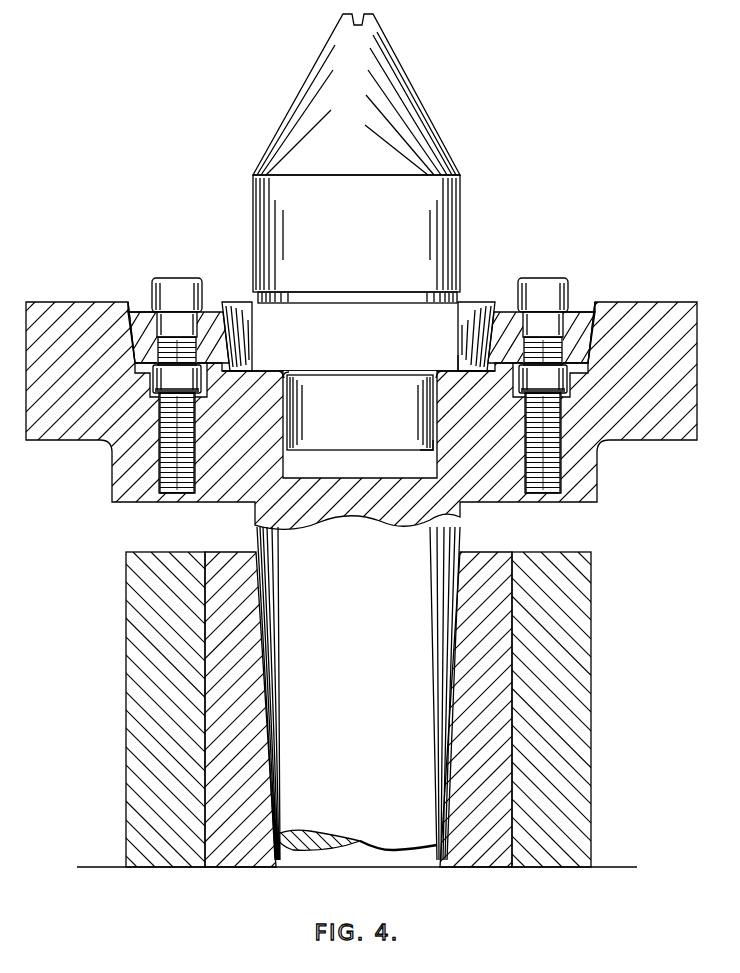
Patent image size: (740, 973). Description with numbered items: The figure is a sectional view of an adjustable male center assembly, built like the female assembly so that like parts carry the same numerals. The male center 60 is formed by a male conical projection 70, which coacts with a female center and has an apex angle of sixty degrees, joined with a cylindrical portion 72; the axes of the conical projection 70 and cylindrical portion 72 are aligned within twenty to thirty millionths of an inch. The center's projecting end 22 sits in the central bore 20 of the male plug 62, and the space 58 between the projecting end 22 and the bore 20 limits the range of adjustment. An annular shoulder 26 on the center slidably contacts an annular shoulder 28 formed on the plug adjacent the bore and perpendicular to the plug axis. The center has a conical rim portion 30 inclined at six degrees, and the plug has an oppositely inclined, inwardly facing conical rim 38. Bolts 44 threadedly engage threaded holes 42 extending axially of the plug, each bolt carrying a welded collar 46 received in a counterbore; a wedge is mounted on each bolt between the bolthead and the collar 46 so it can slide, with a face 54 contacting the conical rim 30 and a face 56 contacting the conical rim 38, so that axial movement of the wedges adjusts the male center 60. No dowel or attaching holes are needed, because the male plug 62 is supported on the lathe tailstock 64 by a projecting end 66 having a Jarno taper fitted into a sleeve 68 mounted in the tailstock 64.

The central bore 20 is at (285, 463).
The projecting end 22 is at (341, 420).
The annular shoulder 26 is at (284, 379).
The annular shoulder 28 is at (256, 371).
The conical rim portion 30 is at (222, 311).
The inwardly facing conical rim 38 is at (132, 308).
The threaded holes 42 is at (163, 500).
The bolts 44 is at (178, 278).
The collar 46 is at (483, 367).
The face 54 is at (226, 326).
The face 56 is at (130, 322).
The space 58 is at (436, 453).
The male center 60 is at (386, 158).
The male plug 62 is at (656, 296).
The lathe tailstock 64 is at (584, 820).
The projecting end 66 is at (345, 615).
The sleeve 68 is at (493, 560).
The male conical projection 70 is at (413, 100).
The cylindrical portion 72 is at (457, 238).